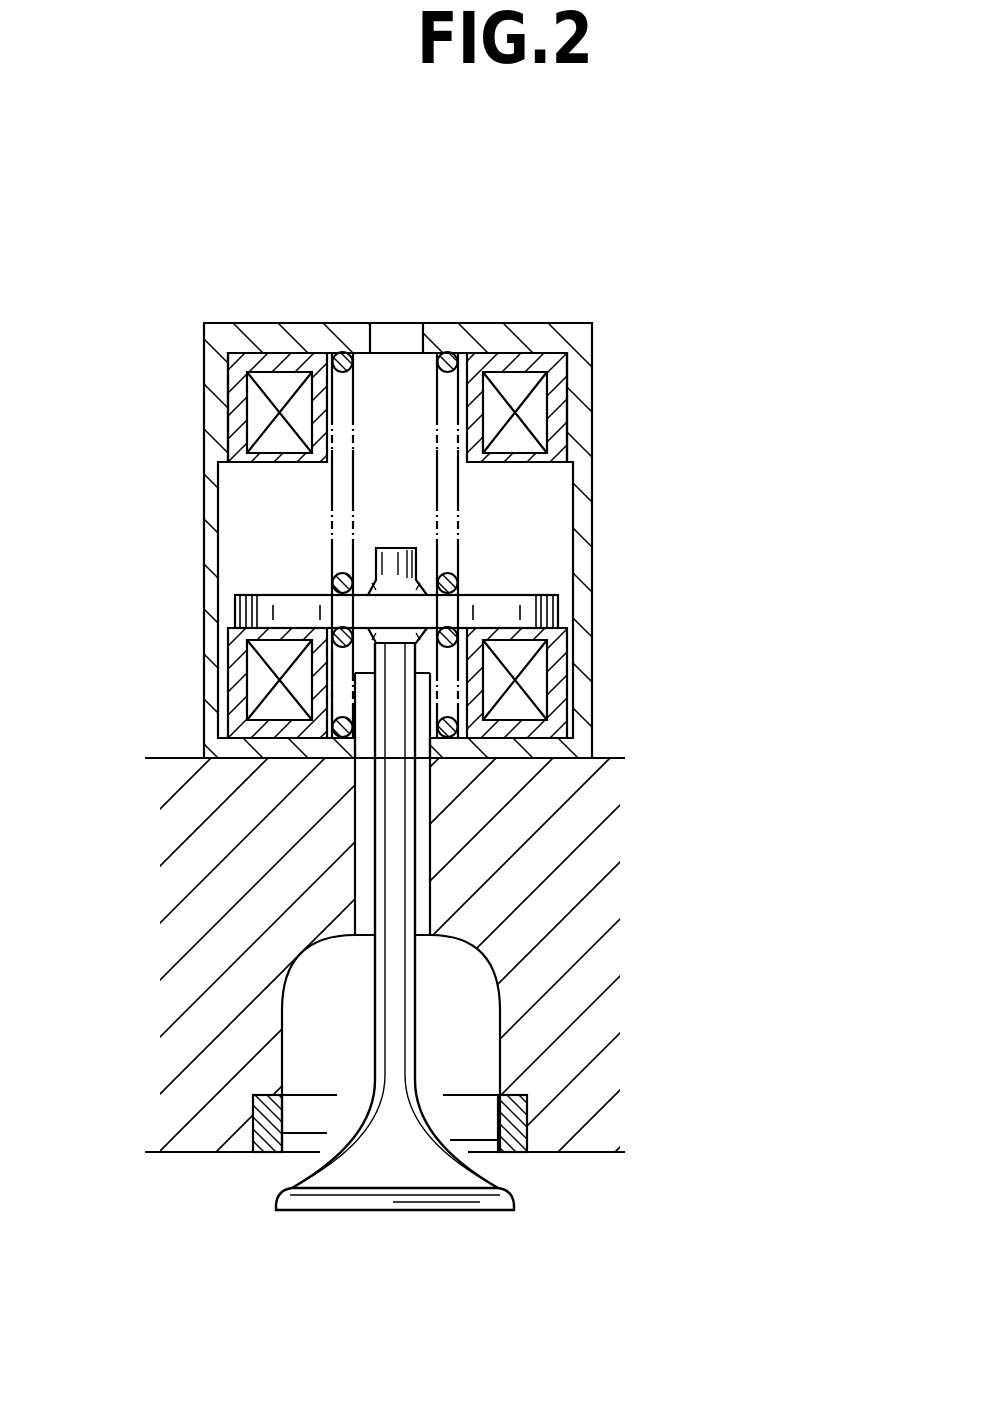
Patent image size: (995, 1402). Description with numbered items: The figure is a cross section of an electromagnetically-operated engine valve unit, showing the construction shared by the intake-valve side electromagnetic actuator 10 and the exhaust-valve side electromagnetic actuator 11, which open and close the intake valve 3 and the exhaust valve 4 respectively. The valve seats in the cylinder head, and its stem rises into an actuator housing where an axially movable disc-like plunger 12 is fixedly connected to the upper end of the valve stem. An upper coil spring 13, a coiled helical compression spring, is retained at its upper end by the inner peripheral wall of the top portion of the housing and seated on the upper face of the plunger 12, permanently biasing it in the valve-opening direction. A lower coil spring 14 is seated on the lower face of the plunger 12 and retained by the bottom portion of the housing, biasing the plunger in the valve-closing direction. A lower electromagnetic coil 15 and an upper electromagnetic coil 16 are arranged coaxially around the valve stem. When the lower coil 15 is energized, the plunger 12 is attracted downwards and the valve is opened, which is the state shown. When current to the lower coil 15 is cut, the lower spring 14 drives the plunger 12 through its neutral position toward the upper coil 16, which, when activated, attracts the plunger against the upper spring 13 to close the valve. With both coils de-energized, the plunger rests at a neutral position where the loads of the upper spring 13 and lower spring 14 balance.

The intake-valve side electromagnetic actuator 10 is at (525, 504).
The exhaust-valve side electromagnetic actuator 11 is at (398, 540).
The movable disc-like plunger 12 is at (298, 605).
The upper coil spring 13 is at (332, 488).
The lower coil spring 14 is at (342, 683).
The lower electromagnetic coil 15 is at (533, 675).
The upper electromagnetic coil 16 is at (533, 413).
The intake valve 3 is at (395, 982).
The exhaust valve 4 is at (460, 1200).